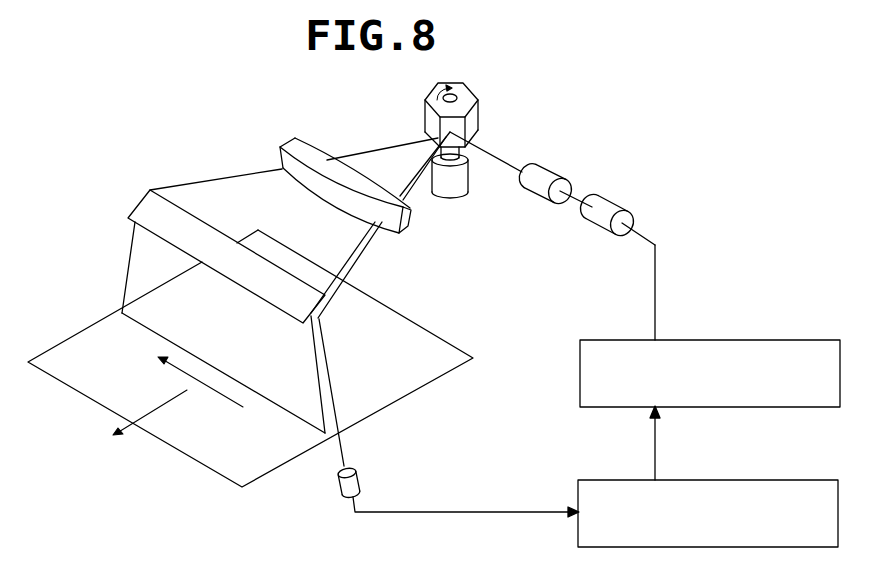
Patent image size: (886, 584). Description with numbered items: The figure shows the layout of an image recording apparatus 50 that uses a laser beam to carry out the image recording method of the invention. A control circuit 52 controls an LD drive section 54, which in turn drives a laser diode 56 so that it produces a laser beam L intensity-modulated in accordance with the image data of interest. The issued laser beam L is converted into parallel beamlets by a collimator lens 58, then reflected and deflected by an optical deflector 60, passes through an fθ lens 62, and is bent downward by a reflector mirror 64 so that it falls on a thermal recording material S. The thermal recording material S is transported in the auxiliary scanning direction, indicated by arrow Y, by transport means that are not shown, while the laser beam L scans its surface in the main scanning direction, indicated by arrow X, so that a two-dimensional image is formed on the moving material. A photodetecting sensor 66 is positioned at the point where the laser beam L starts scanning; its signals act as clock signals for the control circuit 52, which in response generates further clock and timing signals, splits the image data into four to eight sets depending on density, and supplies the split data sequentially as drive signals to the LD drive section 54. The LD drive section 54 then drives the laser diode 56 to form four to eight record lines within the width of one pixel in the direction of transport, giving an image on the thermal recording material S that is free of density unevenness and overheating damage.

The image recording apparatus 50 is at (604, 93).
The control circuit 52 is at (695, 490).
The LD drive section 54 is at (690, 353).
The laser diode 56 is at (610, 207).
The collimator lens 58 is at (553, 177).
The optical deflector 60 is at (465, 92).
The fθ lens 62 is at (313, 157).
The reflector mirror 64 is at (152, 198).
The photodetecting sensor 66 is at (362, 483).
The laser beam L is at (506, 157).
The thermal recording material S is at (83, 331).